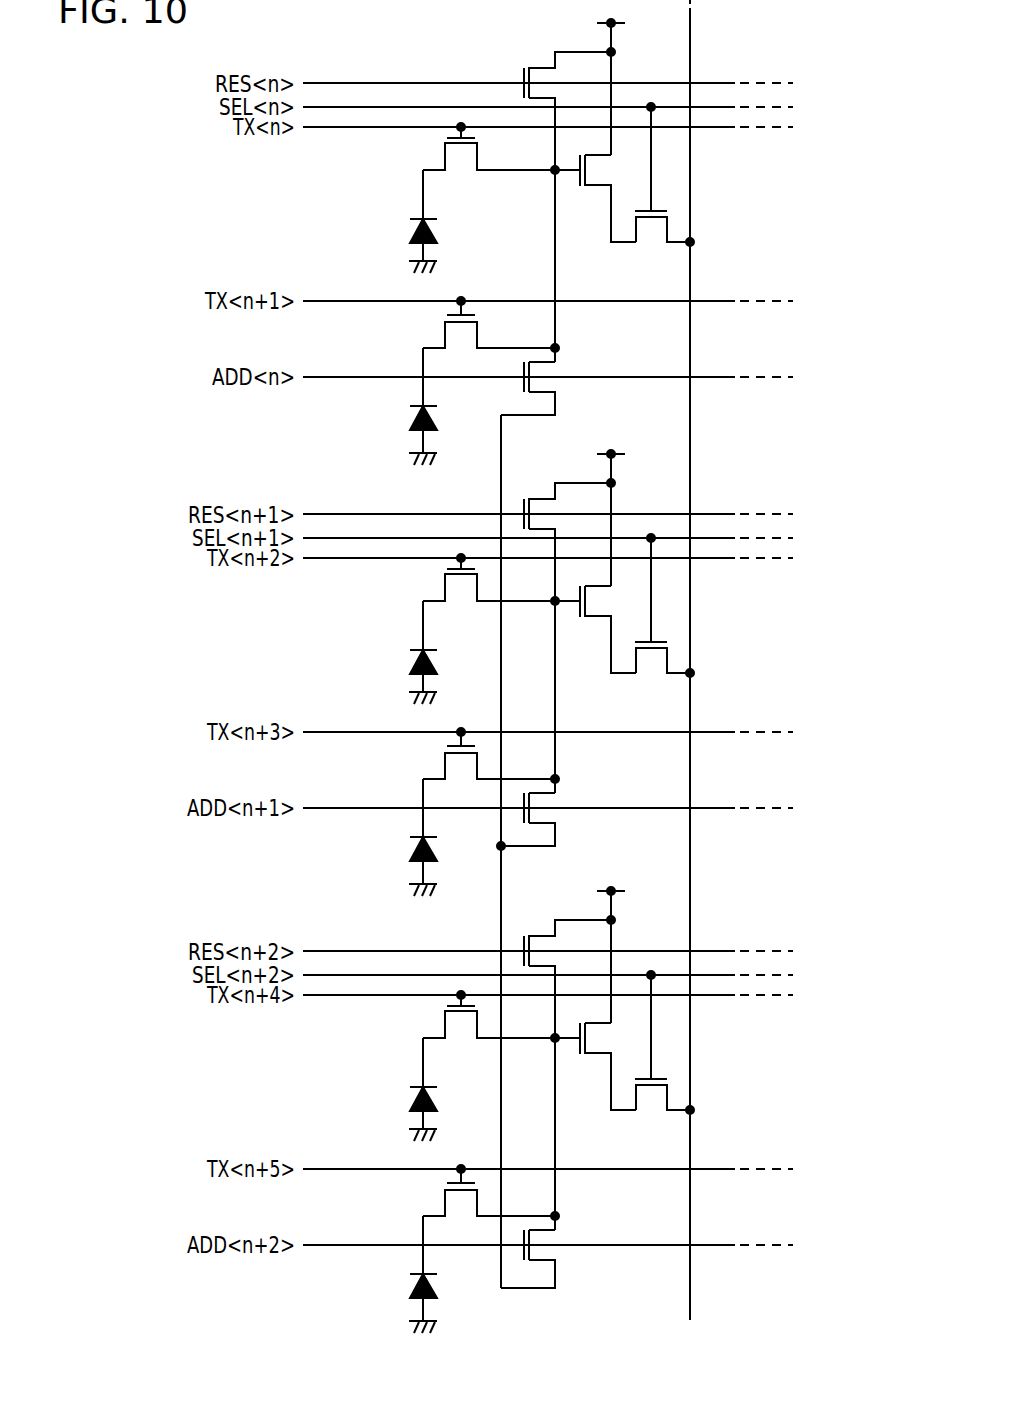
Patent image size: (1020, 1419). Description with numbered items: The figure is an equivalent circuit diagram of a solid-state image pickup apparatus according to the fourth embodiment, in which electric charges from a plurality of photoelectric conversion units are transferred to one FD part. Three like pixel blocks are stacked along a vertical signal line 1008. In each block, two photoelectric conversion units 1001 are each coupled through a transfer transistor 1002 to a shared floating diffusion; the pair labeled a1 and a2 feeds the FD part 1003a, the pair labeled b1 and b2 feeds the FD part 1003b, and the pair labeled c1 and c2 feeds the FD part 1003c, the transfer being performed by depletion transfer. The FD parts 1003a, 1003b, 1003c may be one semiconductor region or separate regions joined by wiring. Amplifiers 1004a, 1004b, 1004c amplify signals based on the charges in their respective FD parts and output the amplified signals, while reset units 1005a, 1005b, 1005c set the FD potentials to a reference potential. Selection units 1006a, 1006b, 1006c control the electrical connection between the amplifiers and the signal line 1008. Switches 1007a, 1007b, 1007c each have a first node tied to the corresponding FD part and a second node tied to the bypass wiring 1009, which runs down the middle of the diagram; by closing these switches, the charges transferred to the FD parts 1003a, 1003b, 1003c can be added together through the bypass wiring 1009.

The photoelectric conversion unit 1001 is at (410, 232).
The transfer transistor 1002 is at (437, 157).
The FD part 1003a is at (556, 168).
The FD part 1003b is at (679, 582).
The FD part 1003c is at (679, 1019).
The amplifier 1004a is at (603, 173).
The amplifier 1004b is at (669, 629).
The amplifier 1004c is at (669, 1066).
The reset unit 1005a is at (536, 64).
The reset unit 1005b is at (566, 617).
The reset unit 1005c is at (566, 1054).
The selection unit 1006a is at (670, 228).
The selection unit 1006b is at (711, 605).
The selection unit 1006c is at (711, 1042).
The switch 1007a is at (548, 372).
The switch 1007b is at (582, 807).
The switch 1007c is at (584, 1245).
The signal line 1008 is at (691, 1275).
The bypass wiring 1009 is at (500, 487).